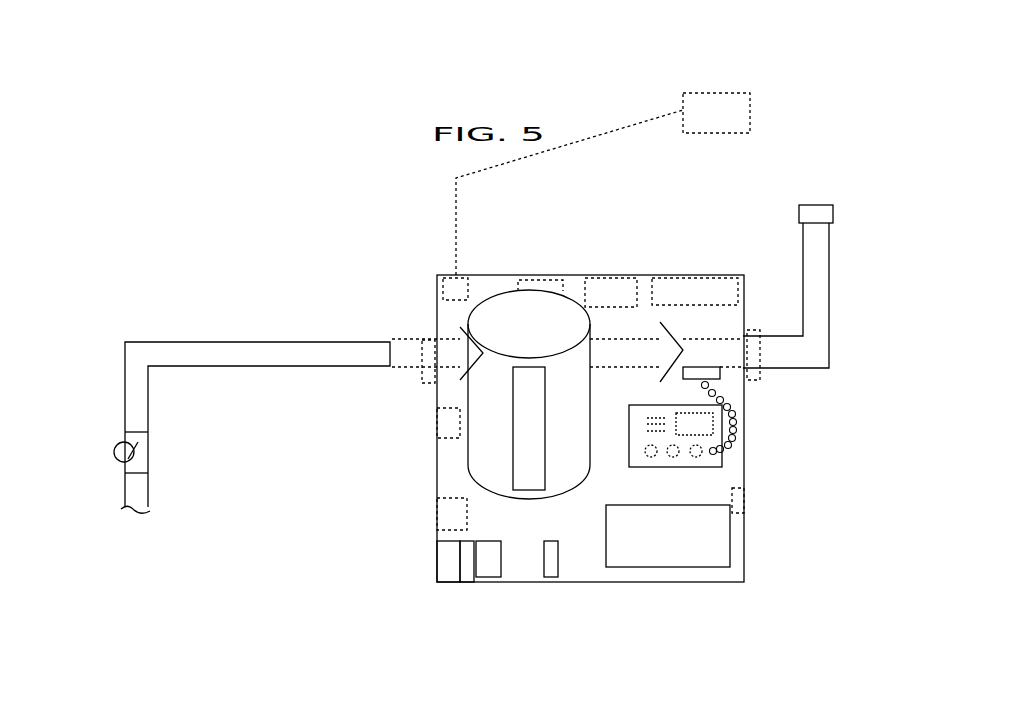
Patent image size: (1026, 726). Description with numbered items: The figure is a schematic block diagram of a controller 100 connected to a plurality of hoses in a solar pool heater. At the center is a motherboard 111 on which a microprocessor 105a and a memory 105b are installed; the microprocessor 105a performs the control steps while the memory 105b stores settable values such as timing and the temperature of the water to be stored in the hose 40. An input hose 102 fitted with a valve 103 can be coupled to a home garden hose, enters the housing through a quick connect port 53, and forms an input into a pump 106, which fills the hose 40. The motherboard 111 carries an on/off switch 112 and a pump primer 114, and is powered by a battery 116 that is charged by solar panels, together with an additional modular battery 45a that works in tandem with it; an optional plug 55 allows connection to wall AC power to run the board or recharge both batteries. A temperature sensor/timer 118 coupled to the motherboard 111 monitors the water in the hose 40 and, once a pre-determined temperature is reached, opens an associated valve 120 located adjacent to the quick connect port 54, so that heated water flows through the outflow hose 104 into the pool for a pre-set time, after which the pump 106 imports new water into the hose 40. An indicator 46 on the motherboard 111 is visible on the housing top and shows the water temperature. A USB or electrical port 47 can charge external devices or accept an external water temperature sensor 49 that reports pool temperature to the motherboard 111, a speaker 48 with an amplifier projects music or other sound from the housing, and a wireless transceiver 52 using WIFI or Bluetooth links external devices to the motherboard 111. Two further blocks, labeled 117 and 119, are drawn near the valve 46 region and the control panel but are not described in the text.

The controller 100 is at (405, 229).
The hose 102 is at (315, 352).
The valve 103 is at (81, 437).
The outflow hose 104 is at (837, 258).
The microprocessor 105a is at (445, 577).
The memory 105b is at (467, 578).
The pump 106 is at (465, 404).
The motherboard 111 is at (597, 463).
The on/off switch 112 is at (567, 609).
The pump primer 114 is at (602, 592).
The battery 116 is at (770, 558).
The sensor 117 is at (448, 520).
The temperature sensor/timer 118 is at (788, 486).
The control panel display 119 is at (730, 432).
The valve 120 is at (805, 415).
The hose 40 is at (648, 350).
The additional battery 45a is at (702, 288).
The indicator 46 is at (437, 423).
The USB or electrical port 47 is at (460, 286).
The speaker 48 is at (618, 288).
The external water temperature sensor 49 is at (748, 92).
The transceiver 52 is at (552, 277).
The quick connect port 53 is at (432, 337).
The quick connect port 54 is at (758, 333).
The plug 55 is at (786, 515).